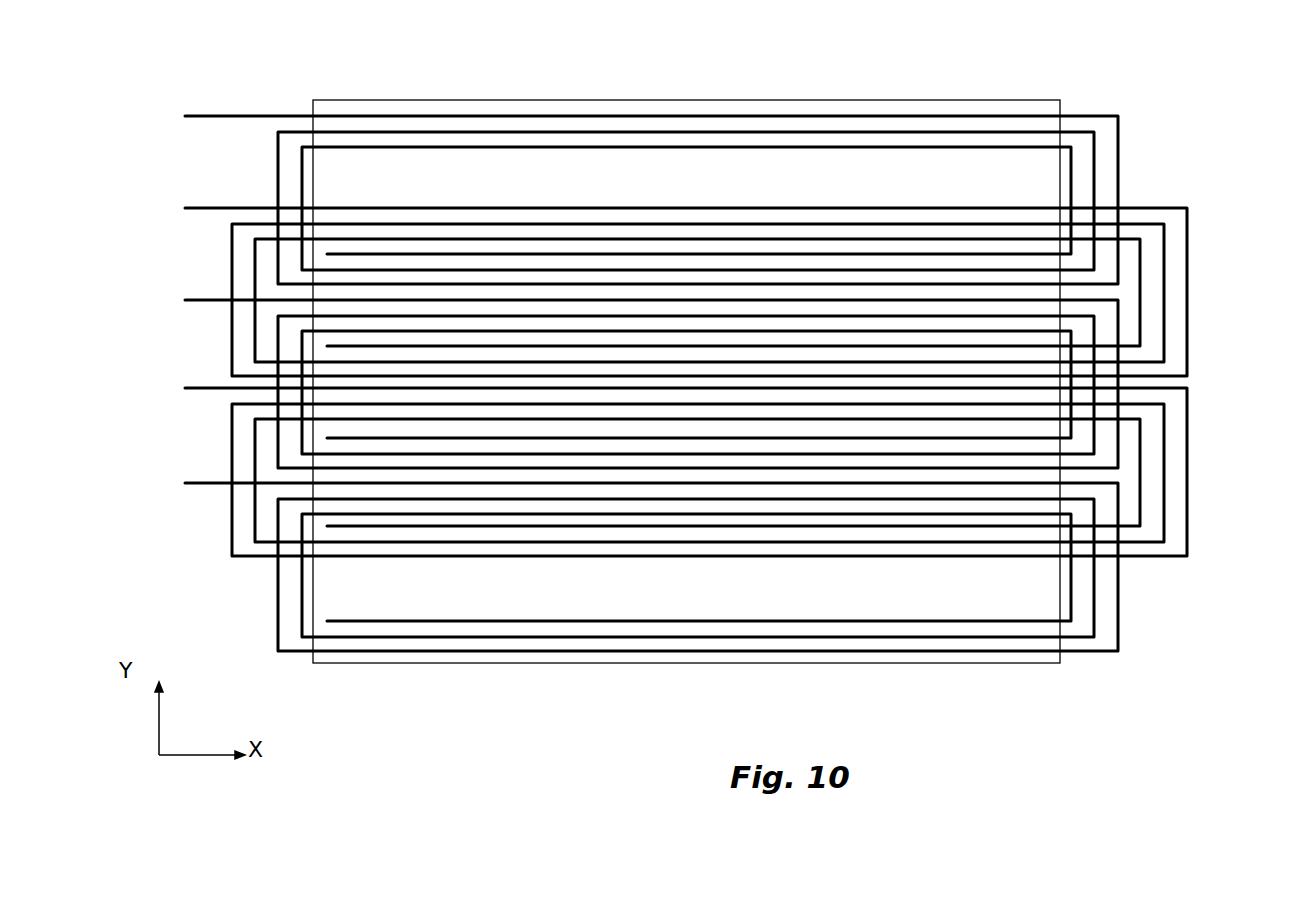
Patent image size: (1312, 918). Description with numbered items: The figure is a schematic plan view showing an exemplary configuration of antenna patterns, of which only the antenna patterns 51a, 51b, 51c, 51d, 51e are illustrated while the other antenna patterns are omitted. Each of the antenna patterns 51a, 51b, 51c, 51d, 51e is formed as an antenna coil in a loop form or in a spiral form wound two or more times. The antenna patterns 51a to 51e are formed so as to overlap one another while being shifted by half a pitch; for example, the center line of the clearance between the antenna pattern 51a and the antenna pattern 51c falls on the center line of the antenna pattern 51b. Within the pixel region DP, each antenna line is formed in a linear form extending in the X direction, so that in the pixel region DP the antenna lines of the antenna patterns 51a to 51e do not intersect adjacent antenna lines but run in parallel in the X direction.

The pixel region DP is at (1030, 100).
The antenna pattern 51a is at (1118, 497).
The antenna pattern 51b is at (1190, 400).
The antenna pattern 51c is at (1118, 319).
The antenna pattern 51d is at (1187, 232).
The antenna pattern 51e is at (1118, 147).